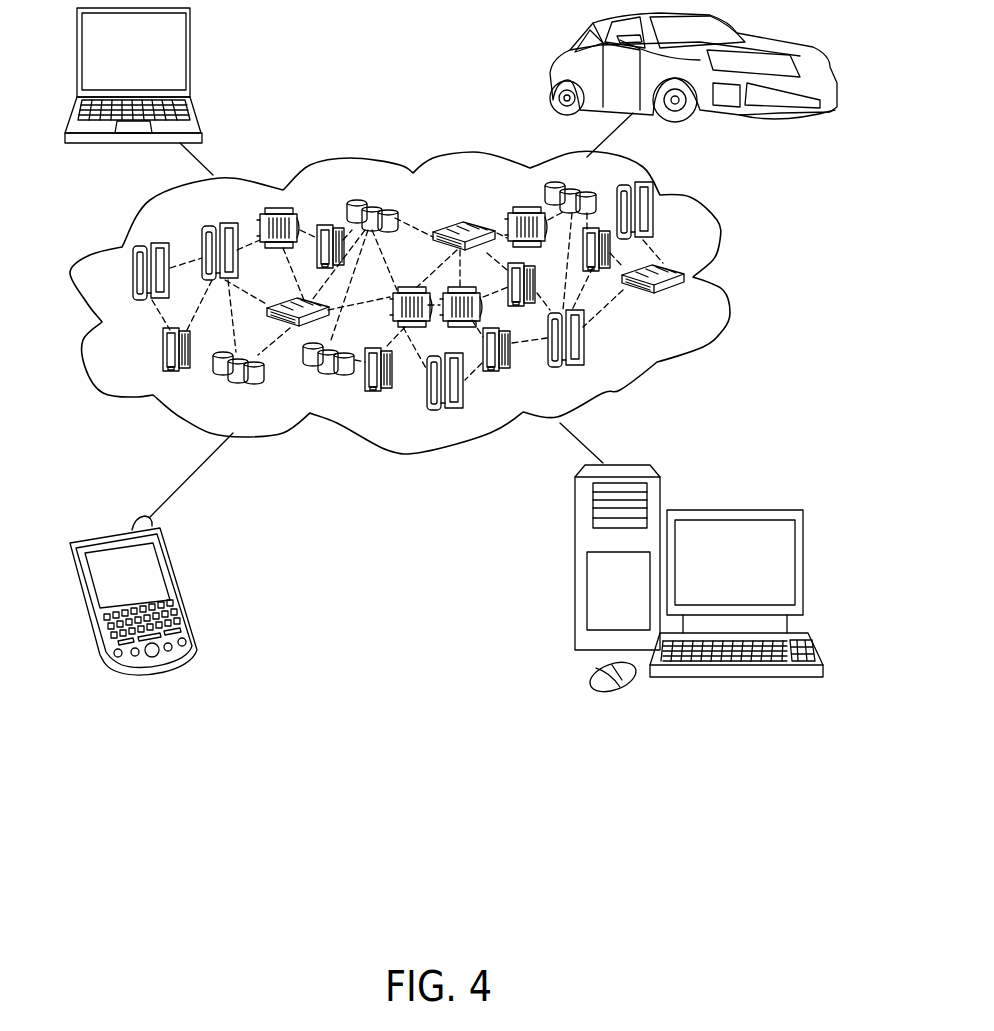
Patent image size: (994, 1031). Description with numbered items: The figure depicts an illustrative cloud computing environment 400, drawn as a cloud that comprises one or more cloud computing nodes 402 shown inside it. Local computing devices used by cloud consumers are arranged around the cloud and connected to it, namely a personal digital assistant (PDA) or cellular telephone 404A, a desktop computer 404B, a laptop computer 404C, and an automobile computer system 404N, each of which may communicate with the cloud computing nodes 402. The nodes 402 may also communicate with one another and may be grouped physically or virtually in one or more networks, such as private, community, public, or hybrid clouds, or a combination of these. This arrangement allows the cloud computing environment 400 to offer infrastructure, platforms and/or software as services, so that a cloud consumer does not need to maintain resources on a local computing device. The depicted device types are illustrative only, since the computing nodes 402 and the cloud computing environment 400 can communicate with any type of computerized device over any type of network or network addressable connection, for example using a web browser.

The cloud computing environment 400 is at (430, 302).
The cloud computing nodes 402 is at (683, 302).
The personal digital assistant (PDA) or cellular telephone 404A is at (173, 557).
The desktop computer 404B is at (723, 510).
The laptop computer 404C is at (191, 34).
The automobile computer system 404N is at (553, 70).